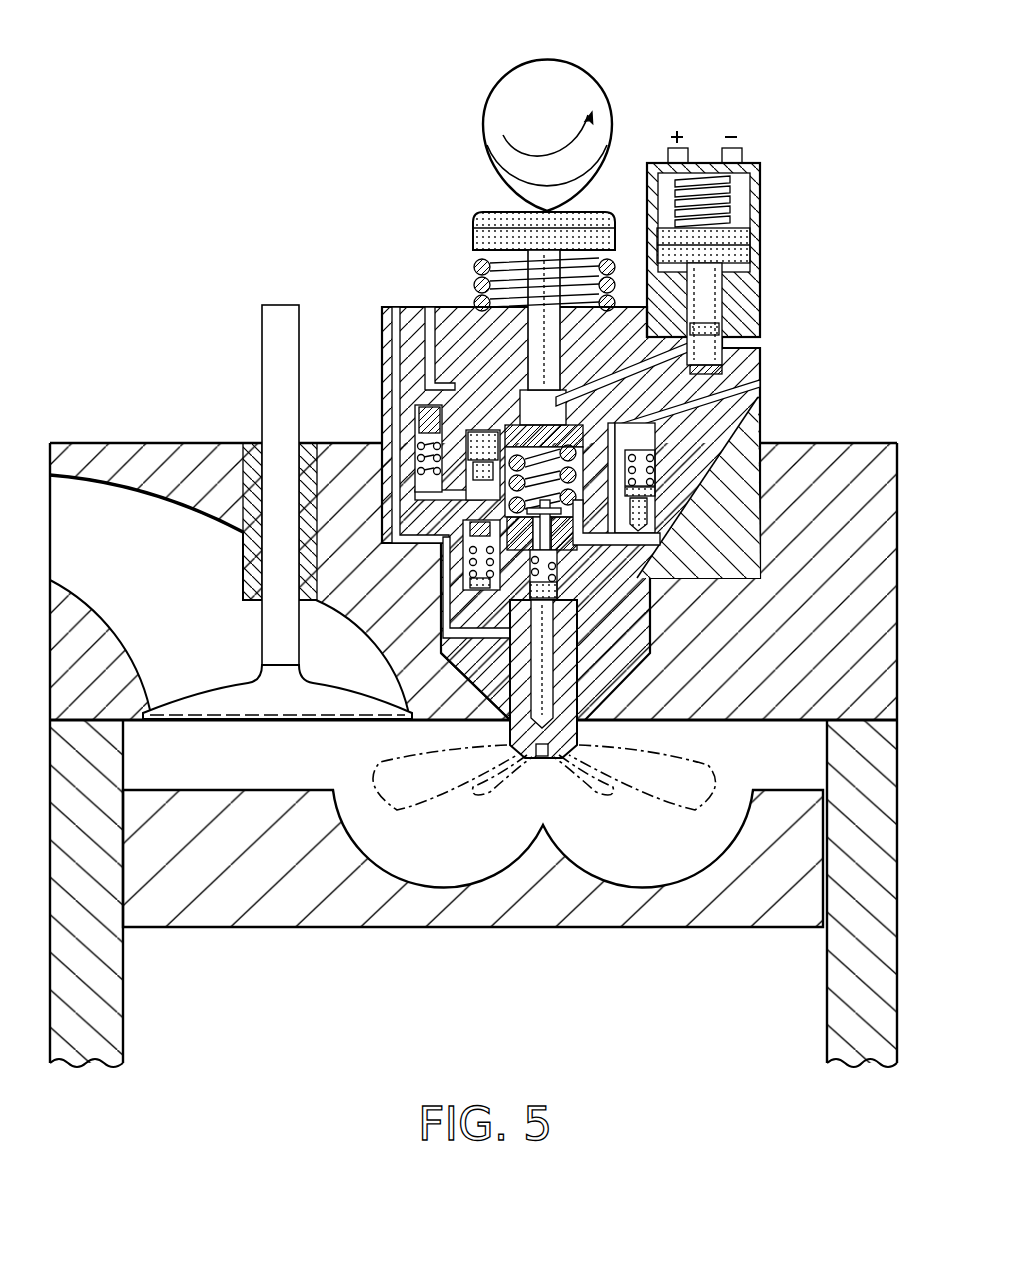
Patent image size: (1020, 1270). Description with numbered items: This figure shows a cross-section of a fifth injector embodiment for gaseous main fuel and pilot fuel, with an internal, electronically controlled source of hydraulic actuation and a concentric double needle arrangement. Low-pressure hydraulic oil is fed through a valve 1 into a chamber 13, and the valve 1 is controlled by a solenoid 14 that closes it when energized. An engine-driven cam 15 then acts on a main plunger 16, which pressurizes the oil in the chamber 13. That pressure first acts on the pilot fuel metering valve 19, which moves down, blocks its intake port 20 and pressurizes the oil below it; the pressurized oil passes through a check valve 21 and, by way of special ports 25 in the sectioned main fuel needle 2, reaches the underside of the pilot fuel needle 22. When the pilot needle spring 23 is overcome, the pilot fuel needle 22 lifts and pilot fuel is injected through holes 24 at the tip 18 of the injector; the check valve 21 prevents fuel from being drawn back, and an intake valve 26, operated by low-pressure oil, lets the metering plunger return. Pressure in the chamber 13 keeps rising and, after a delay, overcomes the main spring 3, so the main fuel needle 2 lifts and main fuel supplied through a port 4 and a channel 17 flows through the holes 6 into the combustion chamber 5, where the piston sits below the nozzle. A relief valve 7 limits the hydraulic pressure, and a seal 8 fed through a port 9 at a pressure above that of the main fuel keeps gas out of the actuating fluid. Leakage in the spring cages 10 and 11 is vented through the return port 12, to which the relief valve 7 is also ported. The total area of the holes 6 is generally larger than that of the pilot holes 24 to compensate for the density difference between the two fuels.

The valve 1 is at (705, 300).
The main fuel needle 2 is at (603, 686).
The main spring 3 is at (588, 420).
The port 4 is at (762, 432).
The combustion chamber 5 is at (648, 863).
The holes 6 is at (503, 735).
The relief valve 7 is at (652, 513).
The seal 8 is at (445, 662).
The port 9 is at (402, 302).
The spring cage 10 is at (630, 447).
The spring cage 11 is at (655, 466).
The return port 12 is at (762, 385).
The chamber 13 is at (538, 405).
The solenoid 14 is at (743, 190).
The cam 15 is at (598, 72).
The main plunger 16 is at (535, 262).
The channel 17 is at (587, 742).
The tip 18 is at (505, 800).
The pilot fuel metering valve 19 is at (468, 432).
The intake port 20 is at (445, 392).
The check valve 21 is at (458, 516).
The pilot fuel needle 22 is at (540, 660).
The pilot needle spring 23 is at (582, 590).
The holes 24 is at (552, 792).
The special ports 25 is at (512, 632).
The intake valve 26 is at (425, 408).